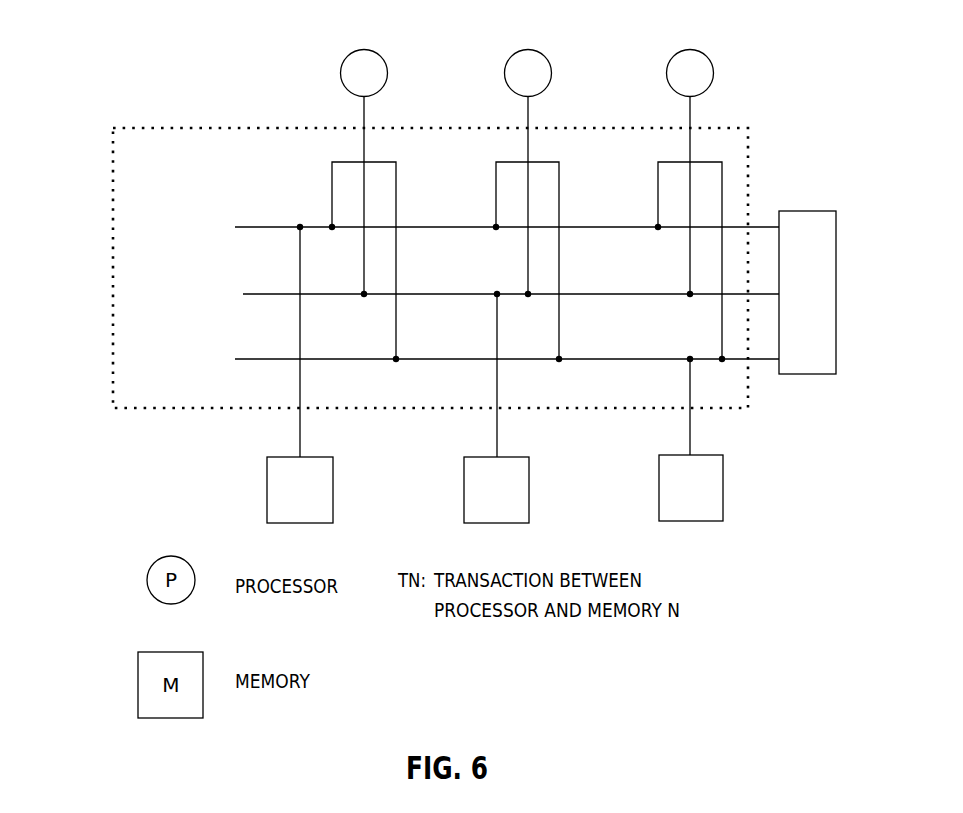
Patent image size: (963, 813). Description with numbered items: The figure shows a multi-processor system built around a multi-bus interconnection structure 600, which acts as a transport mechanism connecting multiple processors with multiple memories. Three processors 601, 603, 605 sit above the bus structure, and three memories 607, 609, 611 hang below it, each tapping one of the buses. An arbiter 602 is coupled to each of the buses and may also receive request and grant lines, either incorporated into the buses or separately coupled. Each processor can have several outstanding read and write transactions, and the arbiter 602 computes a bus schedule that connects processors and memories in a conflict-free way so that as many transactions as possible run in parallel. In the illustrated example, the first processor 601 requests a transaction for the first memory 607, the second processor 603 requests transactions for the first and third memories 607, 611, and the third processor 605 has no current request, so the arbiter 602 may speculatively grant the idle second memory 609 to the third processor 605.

The multi-bus interconnection structure 600 is at (408, 292).
The processor 601 is at (398, 187).
The processor 603 is at (562, 187).
The processor 605 is at (724, 187).
The arbiter 602 is at (817, 314).
The memory 607 is at (345, 484).
The memory 609 is at (542, 484).
The memory 611 is at (736, 482).